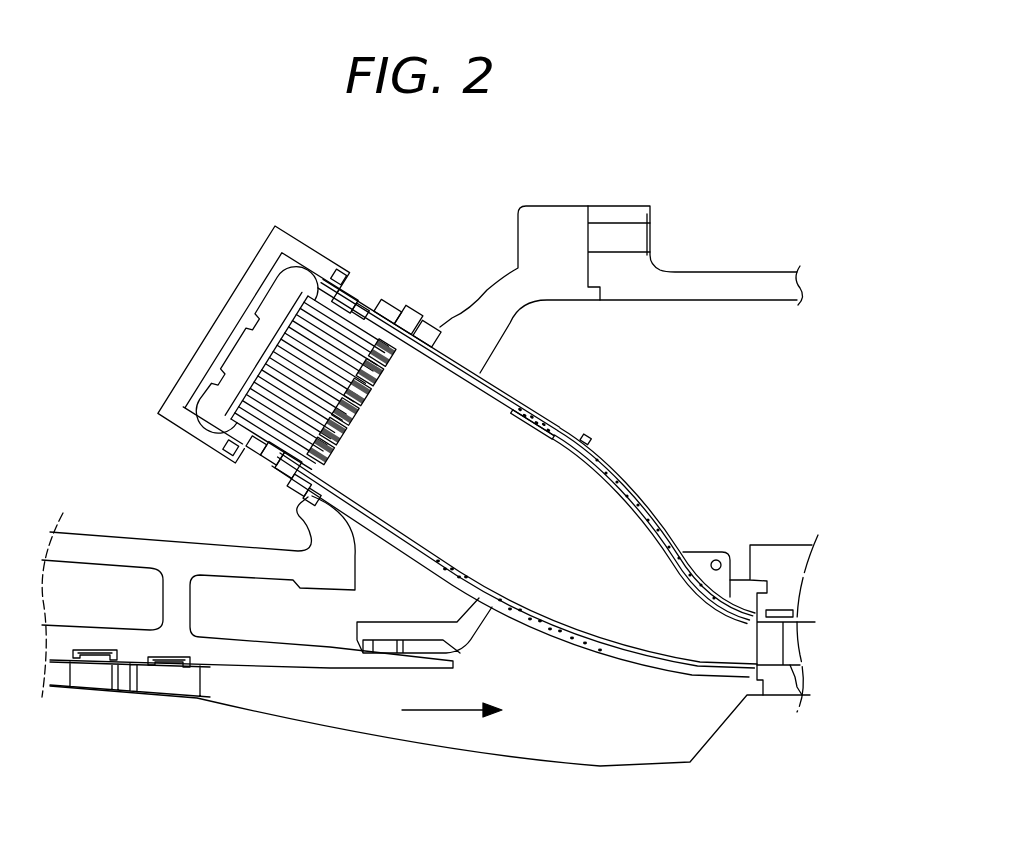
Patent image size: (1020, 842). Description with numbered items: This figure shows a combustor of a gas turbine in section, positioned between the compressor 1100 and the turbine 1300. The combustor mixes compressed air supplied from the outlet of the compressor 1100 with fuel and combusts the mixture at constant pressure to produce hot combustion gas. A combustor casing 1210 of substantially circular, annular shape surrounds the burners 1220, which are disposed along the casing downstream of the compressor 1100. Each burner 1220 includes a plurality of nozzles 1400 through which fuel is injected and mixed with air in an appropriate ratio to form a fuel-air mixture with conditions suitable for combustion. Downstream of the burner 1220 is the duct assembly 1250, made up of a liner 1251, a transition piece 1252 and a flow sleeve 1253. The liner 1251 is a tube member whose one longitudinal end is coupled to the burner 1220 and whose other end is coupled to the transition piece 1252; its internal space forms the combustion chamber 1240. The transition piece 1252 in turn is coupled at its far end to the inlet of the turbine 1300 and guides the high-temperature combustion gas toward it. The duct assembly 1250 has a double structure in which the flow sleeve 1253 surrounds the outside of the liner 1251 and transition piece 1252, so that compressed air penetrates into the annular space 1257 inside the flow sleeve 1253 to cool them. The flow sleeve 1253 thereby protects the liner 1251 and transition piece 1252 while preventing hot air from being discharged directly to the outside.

The compressor 1100 is at (88, 705).
The combustor casing 1210 is at (707, 252).
The burner 1220 is at (226, 316).
The combustion chamber 1240 is at (525, 506).
The duct assembly 1250 is at (536, 451).
The liner 1251 is at (507, 420).
The transition piece 1252 is at (649, 504).
The flow sleeve 1253 is at (563, 436).
The annular space 1257 is at (446, 363).
The turbine 1300 is at (806, 646).
The nozzle 1400 is at (327, 318).